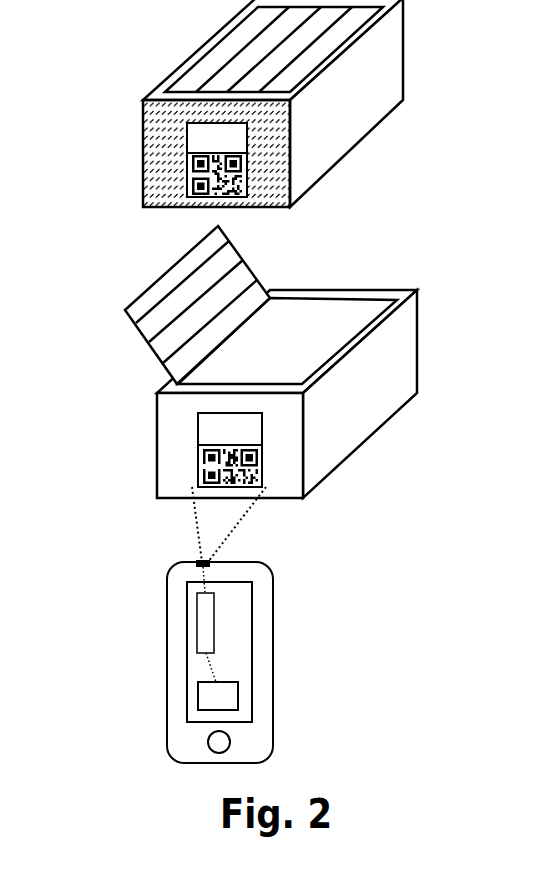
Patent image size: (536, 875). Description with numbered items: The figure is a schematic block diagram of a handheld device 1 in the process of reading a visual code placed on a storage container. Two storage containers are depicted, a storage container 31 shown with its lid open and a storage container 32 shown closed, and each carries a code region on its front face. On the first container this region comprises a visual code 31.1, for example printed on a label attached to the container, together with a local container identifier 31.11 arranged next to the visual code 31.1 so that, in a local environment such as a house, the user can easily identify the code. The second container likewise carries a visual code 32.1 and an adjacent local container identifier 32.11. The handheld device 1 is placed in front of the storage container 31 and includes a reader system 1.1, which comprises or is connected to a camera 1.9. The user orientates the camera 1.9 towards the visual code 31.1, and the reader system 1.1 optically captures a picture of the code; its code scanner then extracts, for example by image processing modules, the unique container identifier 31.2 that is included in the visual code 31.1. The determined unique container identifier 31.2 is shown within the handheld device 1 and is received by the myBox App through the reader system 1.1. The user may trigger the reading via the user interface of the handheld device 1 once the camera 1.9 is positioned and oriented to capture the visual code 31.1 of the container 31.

The handheld device 1 is at (170, 669).
The reader system 1.1 is at (198, 623).
The camera 1.9 is at (141, 549).
The storage container 31 is at (253, 362).
The visual code 31.1 is at (203, 458).
The local container identifier 31.11 is at (200, 420).
The unique container identifier 31.2 is at (200, 697).
The storage container 32 is at (246, 103).
The visual code 32.1 is at (190, 167).
The local container identifier 32.11 is at (187, 125).